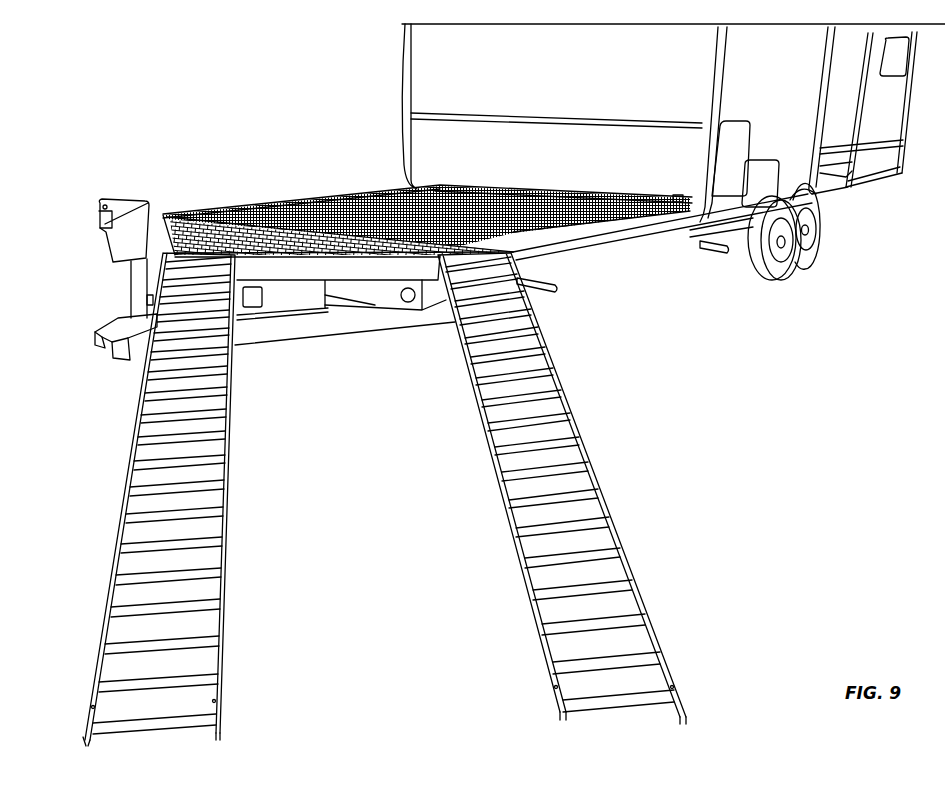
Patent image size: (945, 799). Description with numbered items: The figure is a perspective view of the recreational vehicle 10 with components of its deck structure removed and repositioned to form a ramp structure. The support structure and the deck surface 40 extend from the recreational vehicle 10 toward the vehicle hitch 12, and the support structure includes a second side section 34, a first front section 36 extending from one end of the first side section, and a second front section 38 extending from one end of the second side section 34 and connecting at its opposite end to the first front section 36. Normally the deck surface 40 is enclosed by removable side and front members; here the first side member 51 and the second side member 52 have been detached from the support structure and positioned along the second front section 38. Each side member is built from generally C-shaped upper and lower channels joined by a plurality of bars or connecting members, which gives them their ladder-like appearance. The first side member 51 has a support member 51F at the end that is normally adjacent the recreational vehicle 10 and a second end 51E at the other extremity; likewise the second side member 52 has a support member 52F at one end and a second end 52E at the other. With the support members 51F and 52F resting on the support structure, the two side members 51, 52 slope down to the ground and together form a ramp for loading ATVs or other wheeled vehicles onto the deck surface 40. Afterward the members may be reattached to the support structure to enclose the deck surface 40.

The recreational vehicle 10 is at (764, 142).
The vehicle hitch 12 is at (107, 335).
The second side section 34 is at (600, 248).
The first front section 36 is at (143, 199).
The second front section 38 is at (345, 256).
The deck surface 40 is at (360, 208).
The first side member 51 is at (101, 532).
The support member 51F is at (198, 260).
The second end 51E is at (219, 744).
The second side member 52 is at (645, 555).
The support member 52F is at (478, 260).
The second end 52E is at (625, 735).